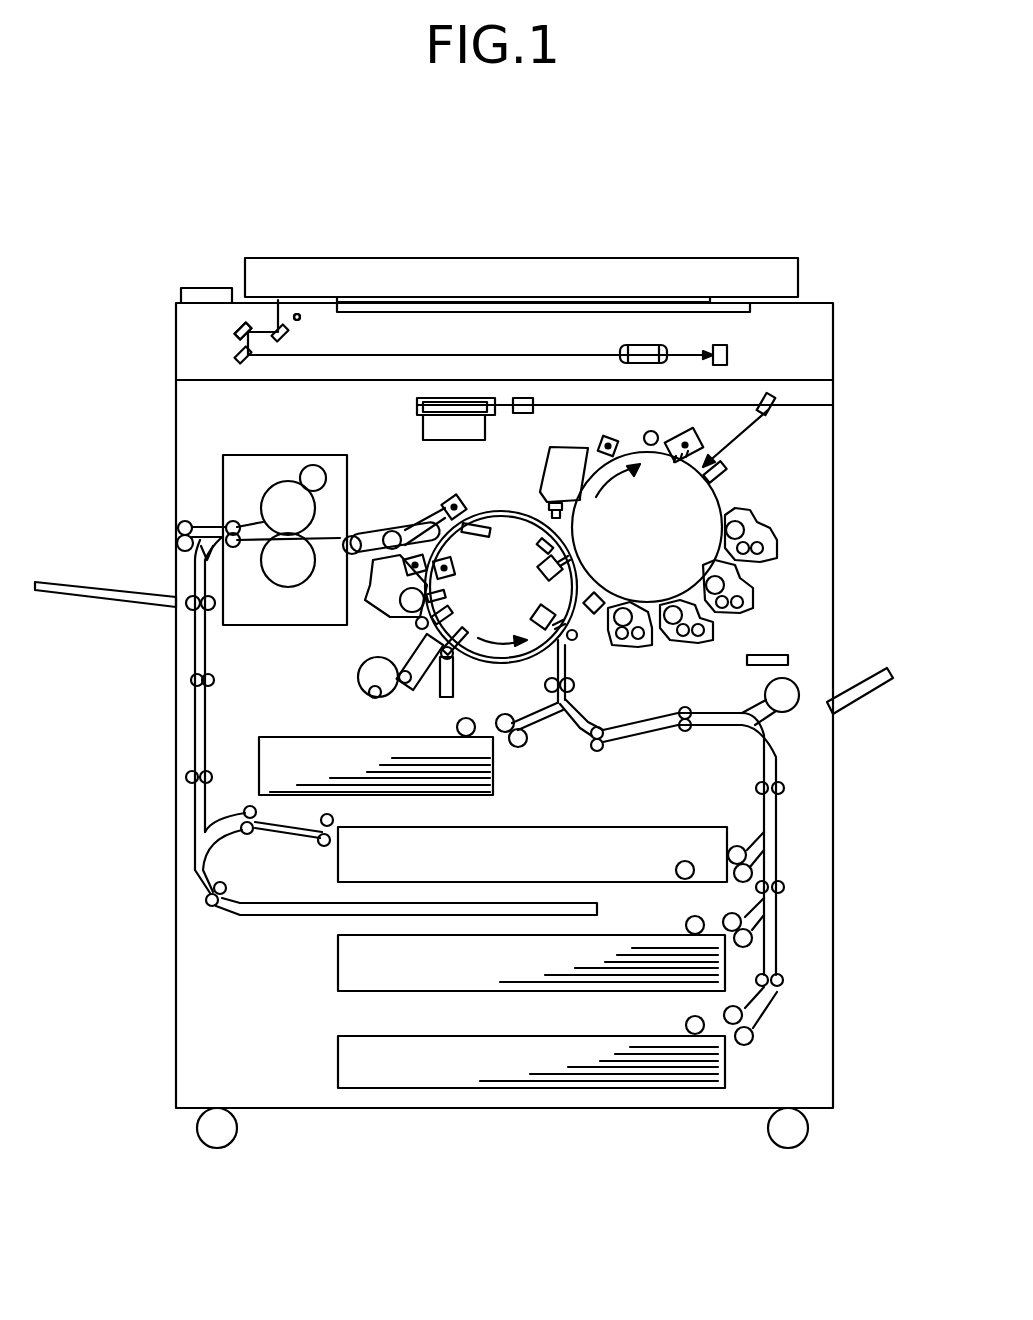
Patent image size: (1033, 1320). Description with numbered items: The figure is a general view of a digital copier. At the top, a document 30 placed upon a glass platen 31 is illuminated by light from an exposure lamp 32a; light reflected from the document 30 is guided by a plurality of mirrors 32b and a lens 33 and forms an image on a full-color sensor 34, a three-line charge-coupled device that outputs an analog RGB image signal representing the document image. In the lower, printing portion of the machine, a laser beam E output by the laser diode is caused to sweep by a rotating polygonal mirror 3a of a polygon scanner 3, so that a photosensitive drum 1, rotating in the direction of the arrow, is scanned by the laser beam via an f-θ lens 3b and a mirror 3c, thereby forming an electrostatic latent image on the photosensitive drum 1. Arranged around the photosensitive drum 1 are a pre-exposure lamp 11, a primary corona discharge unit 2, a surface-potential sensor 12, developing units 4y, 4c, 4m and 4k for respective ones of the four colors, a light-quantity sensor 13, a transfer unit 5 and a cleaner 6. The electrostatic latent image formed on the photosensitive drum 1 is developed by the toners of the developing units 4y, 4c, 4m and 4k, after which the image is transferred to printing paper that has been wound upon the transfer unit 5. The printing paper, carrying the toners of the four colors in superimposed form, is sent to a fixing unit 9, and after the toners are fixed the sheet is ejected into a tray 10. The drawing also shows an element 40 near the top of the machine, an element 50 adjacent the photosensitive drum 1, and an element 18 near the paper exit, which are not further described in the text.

The photosensitive drum 1 is at (718, 490).
The primary corona discharge unit 2 is at (697, 430).
The polygon scanner 3 is at (483, 398).
The rotating polygonal mirror 3a is at (417, 406).
The f-θ lens 3b is at (520, 398).
The mirror 3c is at (776, 400).
The transfer unit 5 is at (514, 602).
The cleaner 6 is at (570, 447).
The fixing unit 9 is at (253, 493).
The tray 10 is at (101, 582).
The pre-exposure lamp 11 is at (652, 431).
The surface-potential sensor 12 is at (725, 465).
The light-quantity sensor 13 is at (590, 614).
The sensor 18 is at (790, 659).
The document 30 is at (380, 295).
The glass platen 31 is at (340, 304).
The exposure lamp 32a is at (300, 318).
The mirrors 32b is at (283, 333).
The lens 33 is at (643, 345).
The full-color sensor 34 is at (727, 350).
The document feeder 40 is at (193, 287).
The charge sensor 50 is at (608, 438).
The developing unit 4y is at (780, 547).
The developing unit 4c is at (753, 597).
The developing unit 4m is at (702, 641).
The developing unit 4k is at (638, 646).
The laser beam E is at (735, 437).